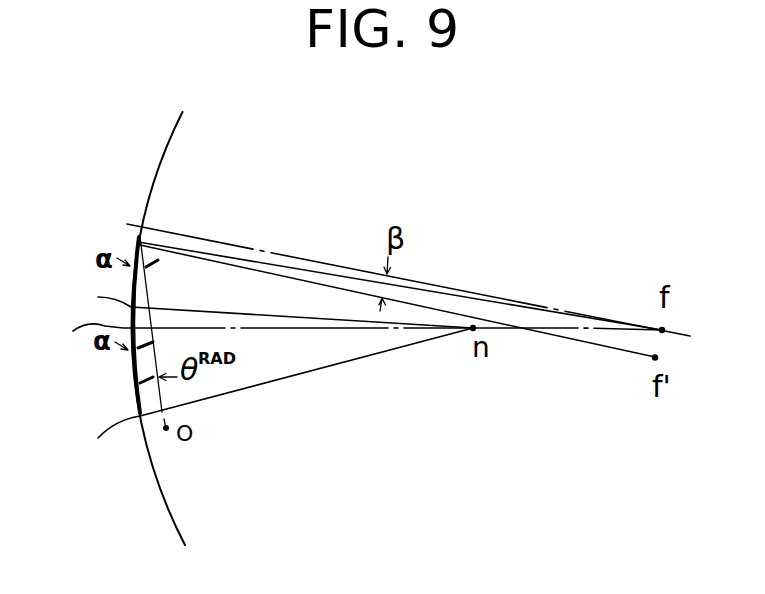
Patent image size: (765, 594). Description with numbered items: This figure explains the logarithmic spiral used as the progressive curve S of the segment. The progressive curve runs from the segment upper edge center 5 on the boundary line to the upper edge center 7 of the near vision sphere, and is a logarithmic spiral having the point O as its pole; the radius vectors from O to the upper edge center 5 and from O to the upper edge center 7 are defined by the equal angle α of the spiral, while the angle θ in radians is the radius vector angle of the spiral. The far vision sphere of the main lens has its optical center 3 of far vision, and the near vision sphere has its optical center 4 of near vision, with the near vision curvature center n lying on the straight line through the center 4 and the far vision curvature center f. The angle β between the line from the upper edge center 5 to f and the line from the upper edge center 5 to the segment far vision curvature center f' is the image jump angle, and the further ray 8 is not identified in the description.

The optical center of far vision 3 is at (143, 223).
The optical center of near vision 4 is at (355, 335).
The upper edge center 5 is at (382, 268).
The upper edge center of the near vision sphere 7 is at (265, 303).
The ray to point n 8 is at (272, 392).